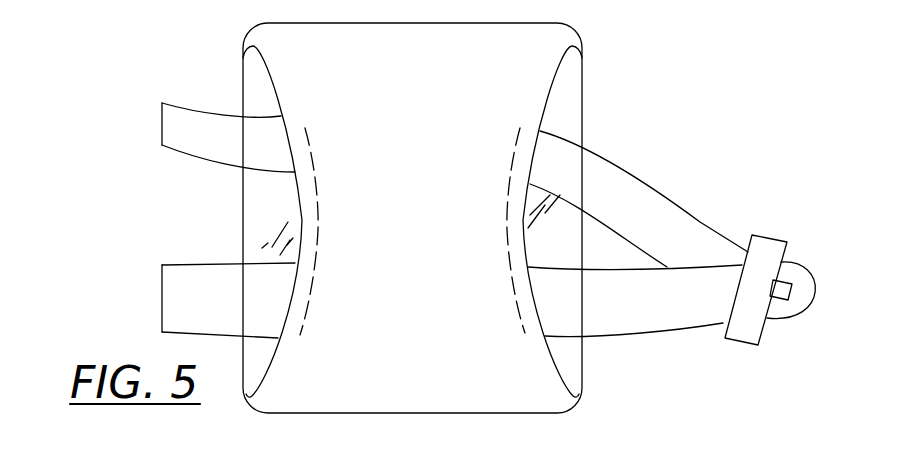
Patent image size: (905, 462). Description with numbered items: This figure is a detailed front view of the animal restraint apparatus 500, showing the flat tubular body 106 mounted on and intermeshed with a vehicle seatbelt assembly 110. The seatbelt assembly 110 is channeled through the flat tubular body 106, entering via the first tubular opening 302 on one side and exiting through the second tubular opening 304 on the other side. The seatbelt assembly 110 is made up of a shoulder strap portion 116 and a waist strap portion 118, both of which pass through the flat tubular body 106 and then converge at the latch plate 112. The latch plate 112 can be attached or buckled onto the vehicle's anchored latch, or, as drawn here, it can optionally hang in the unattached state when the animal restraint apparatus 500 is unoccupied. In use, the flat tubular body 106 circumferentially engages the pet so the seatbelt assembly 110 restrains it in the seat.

The animal restraint apparatus 500 is at (122, 58).
The flat tubular body 106 is at (434, 231).
The shoulder strap portion 116 is at (190, 133).
The waist strap portion 118 is at (180, 297).
The first tubular opening 302 is at (276, 203).
The second tubular opening 304 is at (562, 118).
The seatbelt assembly 110 is at (700, 162).
The latch plate 112 is at (770, 253).